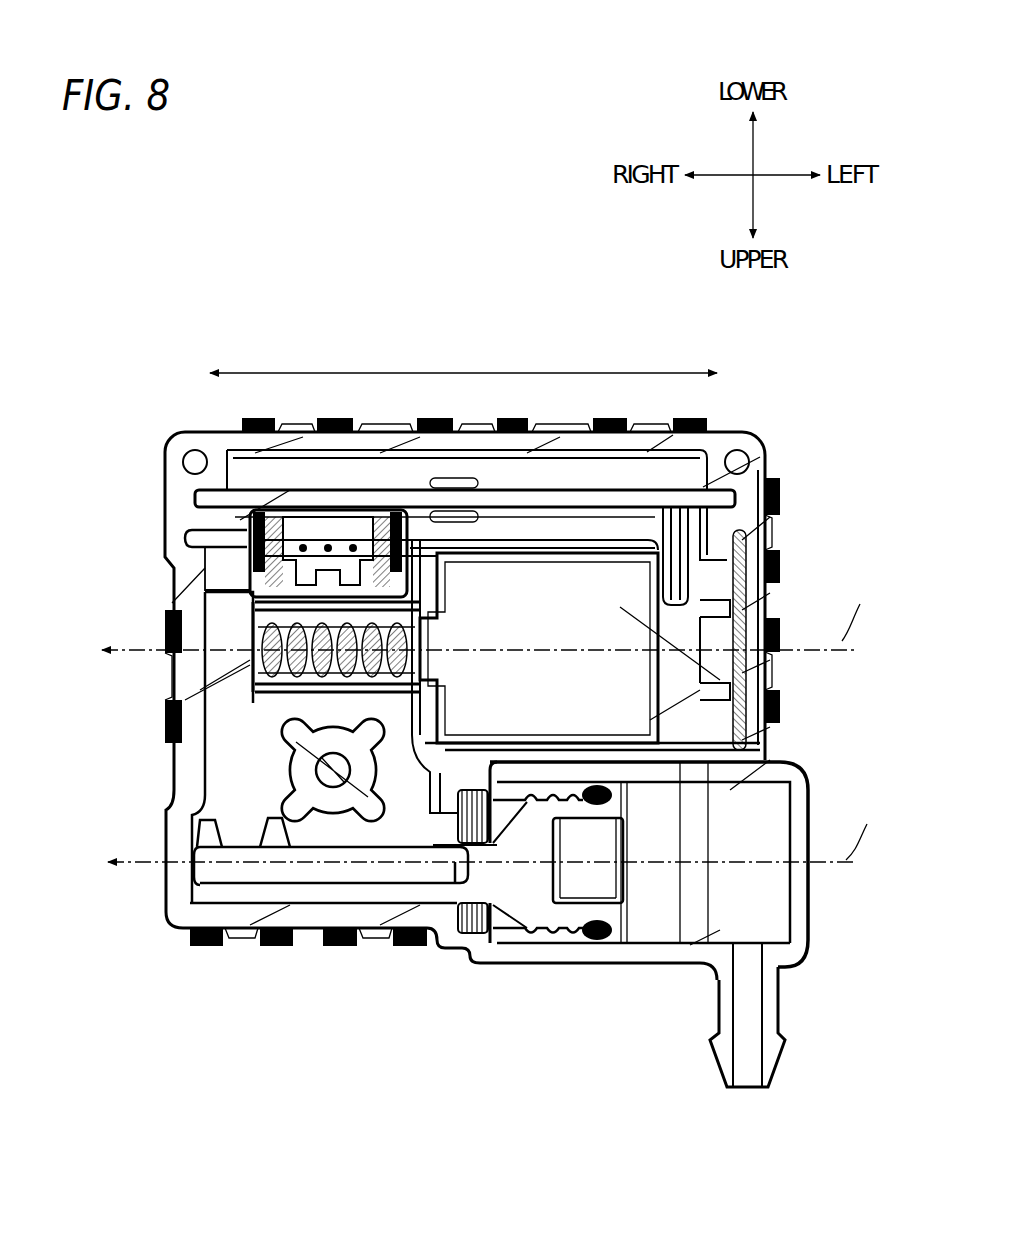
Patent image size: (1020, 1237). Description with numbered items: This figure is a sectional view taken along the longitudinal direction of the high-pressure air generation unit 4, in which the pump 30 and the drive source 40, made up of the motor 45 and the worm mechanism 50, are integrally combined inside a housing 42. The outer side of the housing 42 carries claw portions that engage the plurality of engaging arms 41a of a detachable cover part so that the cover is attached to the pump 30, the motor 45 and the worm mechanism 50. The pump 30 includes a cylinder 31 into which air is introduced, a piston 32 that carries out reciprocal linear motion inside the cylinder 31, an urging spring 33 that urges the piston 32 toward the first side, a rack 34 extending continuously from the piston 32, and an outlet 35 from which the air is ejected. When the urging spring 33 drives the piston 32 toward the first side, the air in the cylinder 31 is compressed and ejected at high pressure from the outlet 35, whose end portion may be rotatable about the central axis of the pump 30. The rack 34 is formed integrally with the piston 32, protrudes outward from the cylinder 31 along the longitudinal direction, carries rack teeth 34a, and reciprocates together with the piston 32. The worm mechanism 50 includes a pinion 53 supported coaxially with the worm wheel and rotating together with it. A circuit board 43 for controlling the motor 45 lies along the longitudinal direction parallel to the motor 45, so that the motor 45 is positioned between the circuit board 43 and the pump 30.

The high-pressure air generation unit 4 is at (462, 220).
The pump 30 is at (548, 987).
The cylinder 31 is at (800, 897).
The piston 32 is at (640, 875).
The urging spring 33 is at (517, 937).
The rack 34 is at (333, 860).
The rack teeth 34a is at (252, 833).
The outlet 35 is at (745, 1092).
The drive source 40 is at (477, 628).
The engaging arms 41a is at (408, 944).
The housing 42 is at (722, 434).
The circuit board 43 is at (555, 498).
The motor 45 is at (635, 630).
The worm mechanism 50 is at (235, 633).
The pinion 53 is at (300, 769).